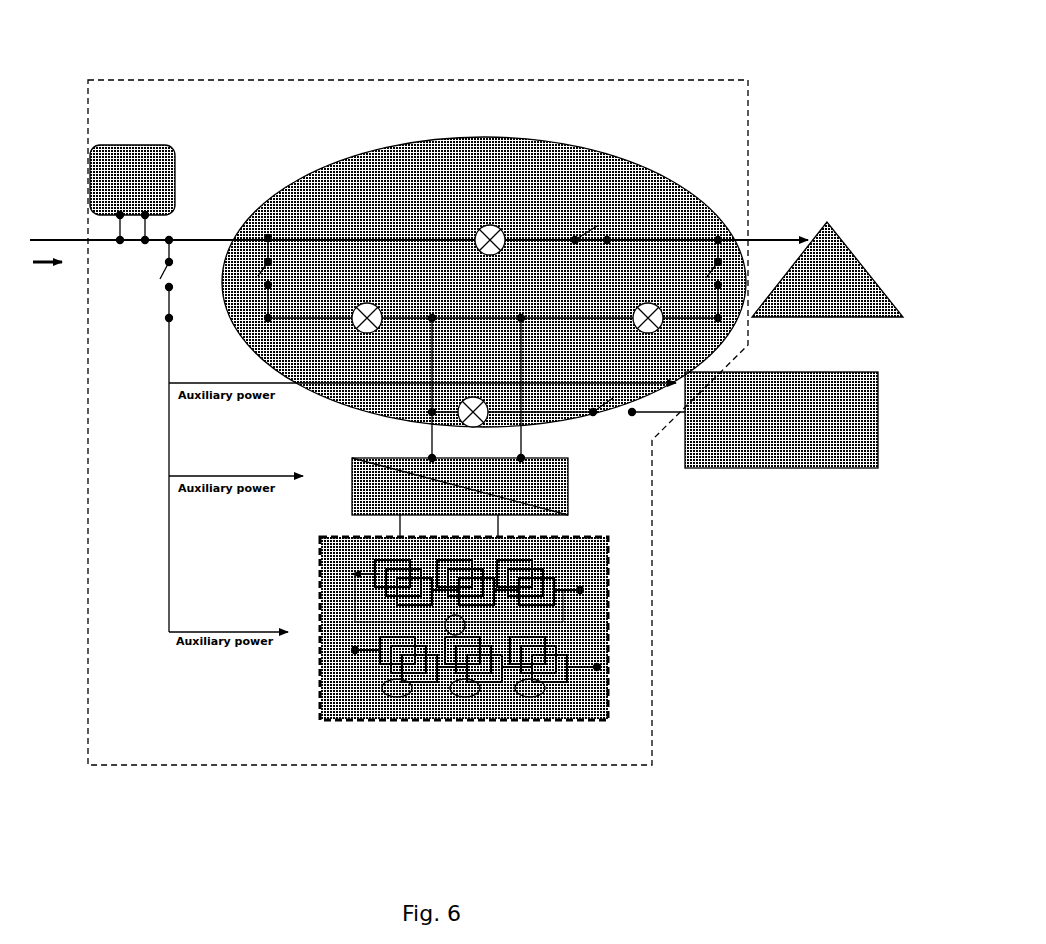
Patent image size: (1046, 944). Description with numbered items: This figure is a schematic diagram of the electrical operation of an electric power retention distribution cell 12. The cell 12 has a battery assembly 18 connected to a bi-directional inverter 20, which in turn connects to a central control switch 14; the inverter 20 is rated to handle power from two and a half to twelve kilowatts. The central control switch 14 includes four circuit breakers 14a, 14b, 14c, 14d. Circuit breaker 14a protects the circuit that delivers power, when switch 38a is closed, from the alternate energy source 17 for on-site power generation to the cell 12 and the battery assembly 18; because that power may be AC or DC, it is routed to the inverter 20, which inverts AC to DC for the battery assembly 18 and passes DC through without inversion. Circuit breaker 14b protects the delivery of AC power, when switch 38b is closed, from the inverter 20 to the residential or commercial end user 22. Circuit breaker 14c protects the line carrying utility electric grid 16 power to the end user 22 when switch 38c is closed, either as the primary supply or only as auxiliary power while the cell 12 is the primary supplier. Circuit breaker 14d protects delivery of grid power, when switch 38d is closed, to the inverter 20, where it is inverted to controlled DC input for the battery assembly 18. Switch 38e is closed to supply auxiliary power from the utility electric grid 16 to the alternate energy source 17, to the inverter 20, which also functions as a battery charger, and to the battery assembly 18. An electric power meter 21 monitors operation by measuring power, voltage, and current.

The cell 12 is at (430, 765).
The central control switch 14 is at (583, 145).
The circuit breaker 14a is at (433, 427).
The circuit breaker 14b is at (650, 303).
The circuit breaker 14c is at (479, 226).
The circuit breaker 14d is at (357, 303).
The utility electric grid 16 is at (32, 240).
The alternate energy source 17 is at (862, 468).
The battery assembly 18 is at (567, 515).
The bi-directional inverter 20 is at (607, 600).
The electric power meter 21 is at (146, 145).
The residential or commercial end user 22 is at (847, 237).
The switch 38a is at (613, 423).
The switch 38b is at (703, 262).
The switch 38c is at (583, 205).
The switch 38d is at (254, 268).
The switch 38e is at (147, 277).